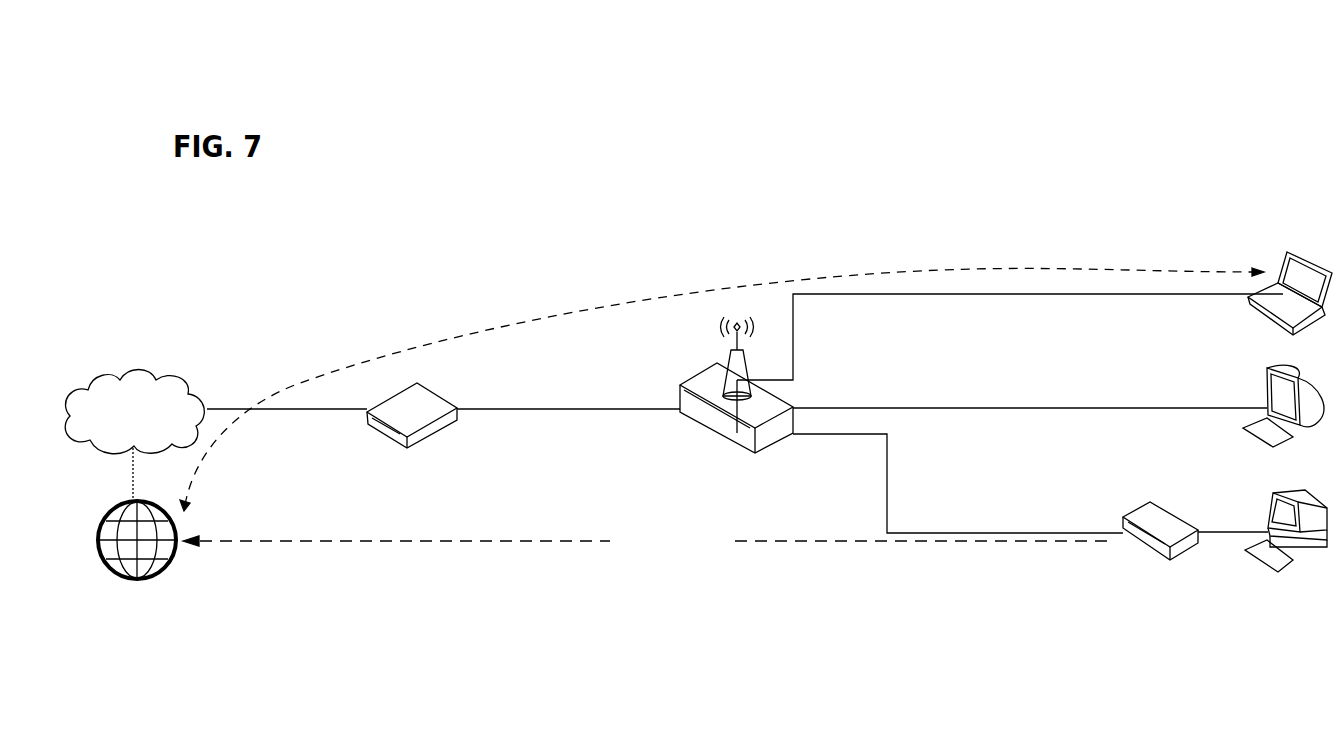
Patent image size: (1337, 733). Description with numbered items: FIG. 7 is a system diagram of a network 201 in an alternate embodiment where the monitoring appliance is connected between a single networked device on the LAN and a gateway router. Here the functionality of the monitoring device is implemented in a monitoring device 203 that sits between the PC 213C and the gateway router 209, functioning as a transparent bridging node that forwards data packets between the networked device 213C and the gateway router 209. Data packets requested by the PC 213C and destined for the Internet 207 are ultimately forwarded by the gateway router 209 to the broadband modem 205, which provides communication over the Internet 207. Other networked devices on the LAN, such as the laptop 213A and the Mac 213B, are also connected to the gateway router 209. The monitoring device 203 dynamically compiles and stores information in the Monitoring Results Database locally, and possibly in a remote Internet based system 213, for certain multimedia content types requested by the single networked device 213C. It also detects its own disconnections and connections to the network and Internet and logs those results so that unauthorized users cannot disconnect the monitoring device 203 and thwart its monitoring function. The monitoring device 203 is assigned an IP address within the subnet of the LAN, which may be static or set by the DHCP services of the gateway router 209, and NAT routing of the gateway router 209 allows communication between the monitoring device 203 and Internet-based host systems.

The network 201 is at (667, 176).
The monitoring device 203 is at (1153, 500).
The broadband modem 205 is at (383, 408).
The Internet 207 is at (132, 375).
The gateway router 209 is at (697, 378).
The remote Internet based system 213 is at (163, 570).
The laptop 213A is at (1293, 253).
The Mac computer 213B is at (1264, 368).
The PC 213C is at (1273, 497).